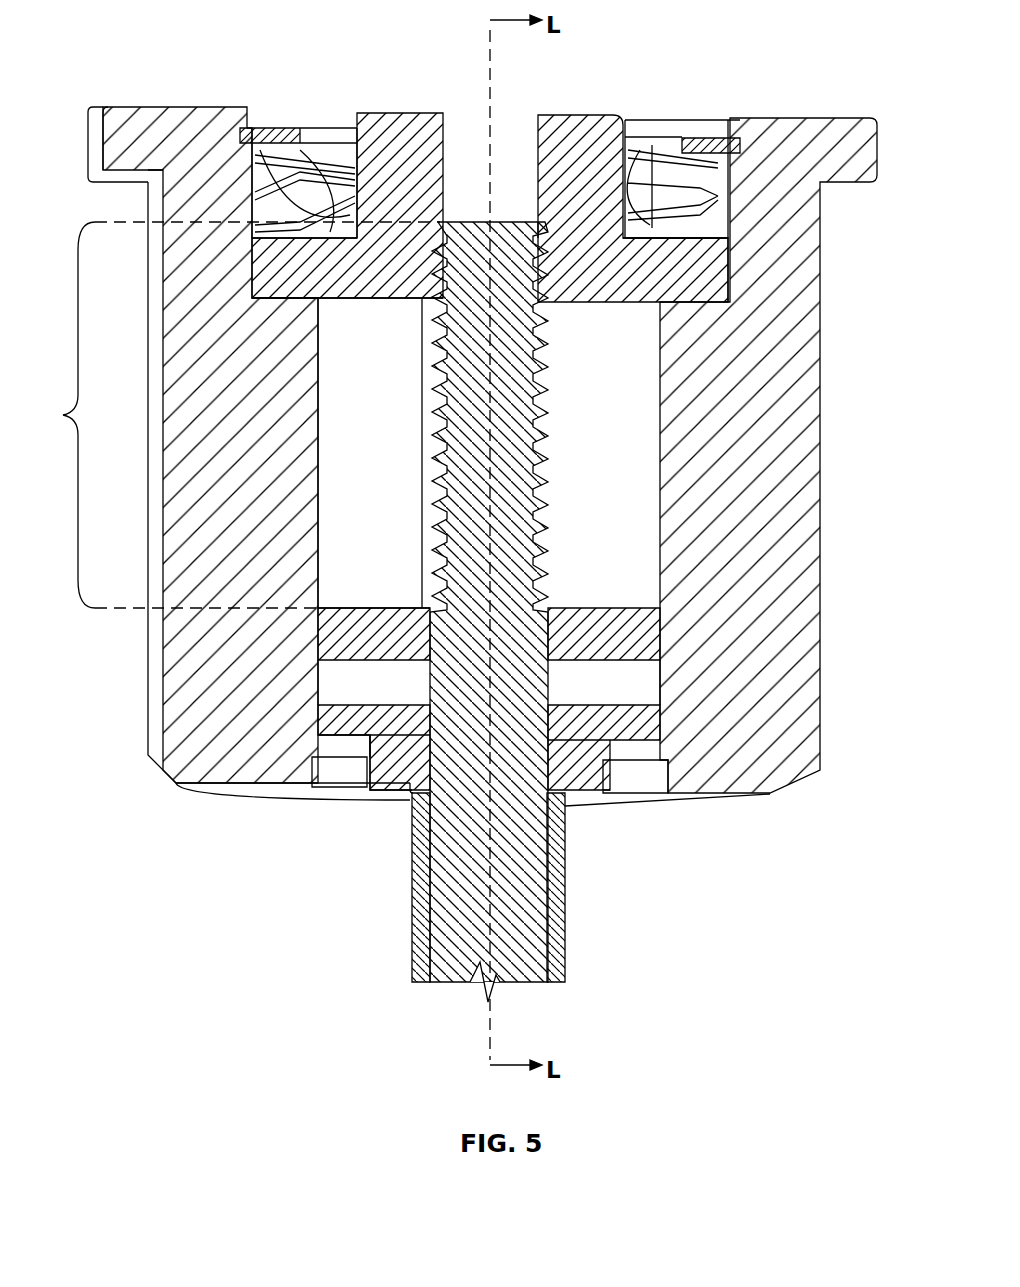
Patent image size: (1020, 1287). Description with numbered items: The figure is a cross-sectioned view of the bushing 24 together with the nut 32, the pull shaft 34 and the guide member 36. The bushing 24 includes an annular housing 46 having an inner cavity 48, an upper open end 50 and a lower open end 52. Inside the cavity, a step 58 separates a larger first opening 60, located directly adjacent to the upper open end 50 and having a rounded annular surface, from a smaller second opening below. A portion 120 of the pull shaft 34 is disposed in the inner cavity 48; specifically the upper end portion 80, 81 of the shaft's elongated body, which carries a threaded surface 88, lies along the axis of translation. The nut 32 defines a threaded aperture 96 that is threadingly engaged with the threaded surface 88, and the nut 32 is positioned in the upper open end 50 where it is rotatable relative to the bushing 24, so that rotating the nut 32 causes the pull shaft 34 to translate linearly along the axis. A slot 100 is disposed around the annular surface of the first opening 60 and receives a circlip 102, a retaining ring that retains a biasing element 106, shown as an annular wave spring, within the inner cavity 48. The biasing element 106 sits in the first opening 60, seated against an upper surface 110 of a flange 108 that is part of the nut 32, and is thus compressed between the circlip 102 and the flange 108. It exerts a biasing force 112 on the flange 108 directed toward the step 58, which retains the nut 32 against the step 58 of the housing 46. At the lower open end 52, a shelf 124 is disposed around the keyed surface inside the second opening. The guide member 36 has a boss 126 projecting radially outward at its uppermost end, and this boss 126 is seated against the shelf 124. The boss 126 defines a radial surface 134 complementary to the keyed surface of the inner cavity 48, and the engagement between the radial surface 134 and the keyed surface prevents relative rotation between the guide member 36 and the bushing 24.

The bushing 24 is at (856, 223).
The nut 32 is at (575, 140).
The pull shaft 34 is at (522, 932).
The guide member 36 is at (557, 866).
The annular housing 46 is at (757, 588).
The inner cavity 48 is at (364, 528).
The upper open end 50 is at (637, 526).
The lower open end 52 is at (330, 786).
The step 58 is at (688, 294).
The first opening 60 is at (360, 130).
The upper end portion 80 is at (422, 367).
The upper end portion 81 is at (471, 222).
The threaded surface 88 is at (548, 360).
The threaded aperture 96 is at (540, 246).
The slot 100 is at (735, 127).
The circlip 102 is at (698, 138).
The biasing element 106 is at (286, 142).
The flange 108 is at (352, 299).
The upper surface 110 is at (340, 202).
The biasing force 112 is at (652, 236).
The portion 120 is at (229, 415).
The shelf 124 is at (327, 760).
The boss 126 is at (566, 726).
The radial surface 134 is at (663, 735).